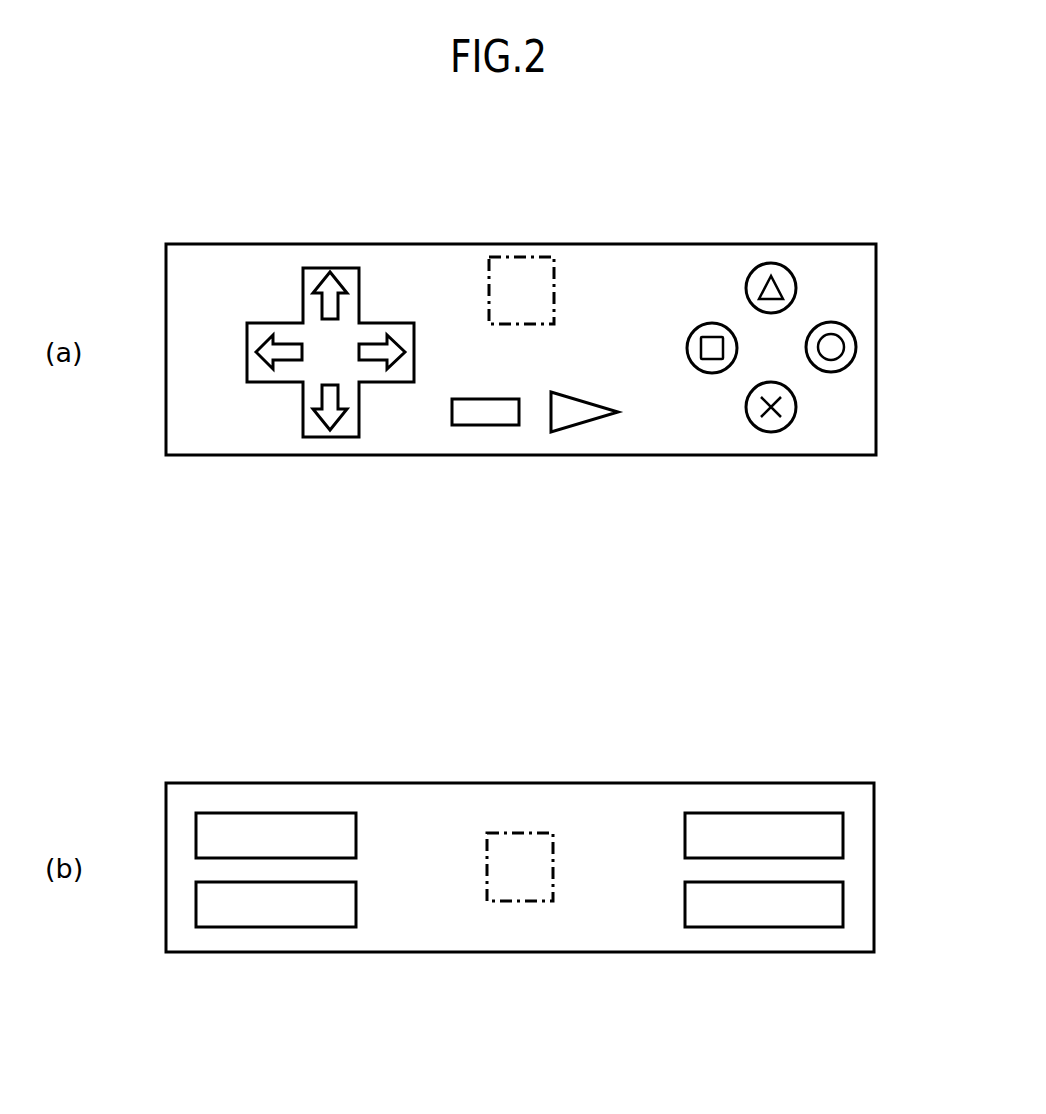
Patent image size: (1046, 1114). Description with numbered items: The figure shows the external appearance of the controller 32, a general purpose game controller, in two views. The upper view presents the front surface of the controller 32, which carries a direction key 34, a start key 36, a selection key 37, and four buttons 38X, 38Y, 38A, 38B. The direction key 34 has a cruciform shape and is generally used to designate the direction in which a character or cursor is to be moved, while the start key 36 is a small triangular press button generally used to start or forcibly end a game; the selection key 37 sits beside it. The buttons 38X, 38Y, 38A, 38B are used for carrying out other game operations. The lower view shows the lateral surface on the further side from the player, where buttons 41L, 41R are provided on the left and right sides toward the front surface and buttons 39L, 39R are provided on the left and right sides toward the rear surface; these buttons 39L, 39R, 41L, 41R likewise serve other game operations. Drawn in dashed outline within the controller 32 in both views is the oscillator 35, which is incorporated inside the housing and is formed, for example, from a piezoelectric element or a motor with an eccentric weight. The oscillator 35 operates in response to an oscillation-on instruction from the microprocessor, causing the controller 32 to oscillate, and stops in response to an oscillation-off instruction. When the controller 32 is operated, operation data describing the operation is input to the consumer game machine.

The controller 32 is at (229, 244).
The direction key 34 is at (360, 291).
The oscillator 35 is at (538, 257).
The start key 36 is at (586, 421).
The selection key 37 is at (487, 426).
The button 38Y is at (746, 289).
The button 38X is at (687, 348).
The button 38A is at (746, 408).
The button 38B is at (857, 347).
The button 39L is at (275, 813).
The button 39R is at (763, 813).
The button 41L is at (279, 927).
The button 41R is at (767, 927).